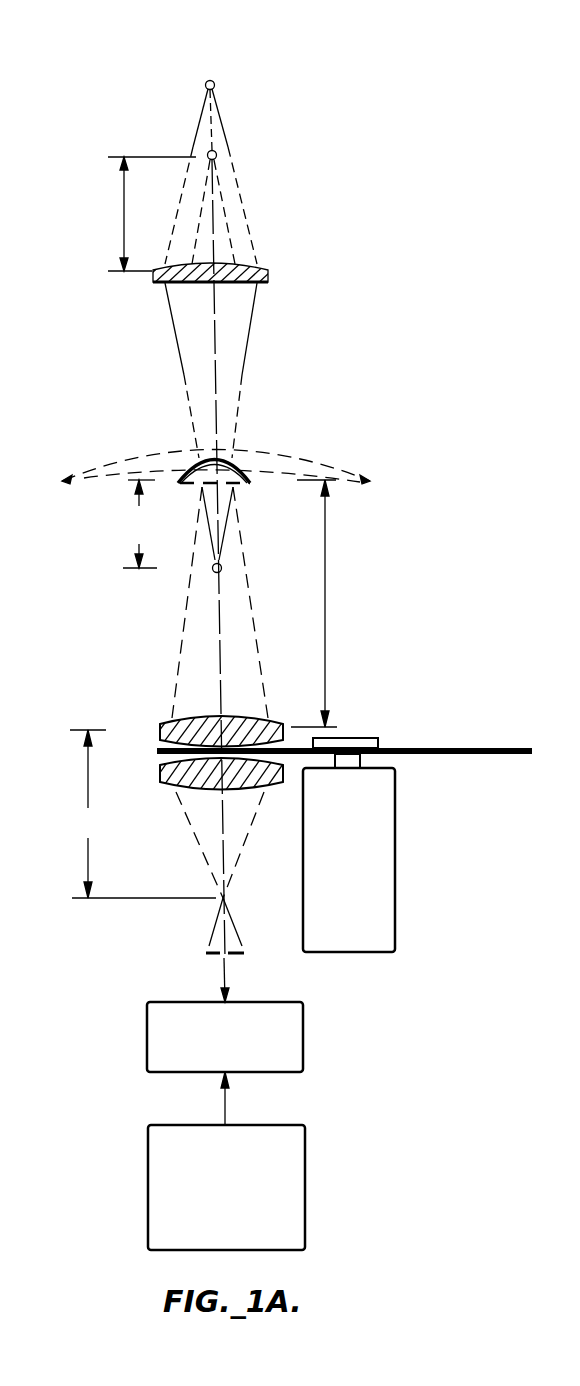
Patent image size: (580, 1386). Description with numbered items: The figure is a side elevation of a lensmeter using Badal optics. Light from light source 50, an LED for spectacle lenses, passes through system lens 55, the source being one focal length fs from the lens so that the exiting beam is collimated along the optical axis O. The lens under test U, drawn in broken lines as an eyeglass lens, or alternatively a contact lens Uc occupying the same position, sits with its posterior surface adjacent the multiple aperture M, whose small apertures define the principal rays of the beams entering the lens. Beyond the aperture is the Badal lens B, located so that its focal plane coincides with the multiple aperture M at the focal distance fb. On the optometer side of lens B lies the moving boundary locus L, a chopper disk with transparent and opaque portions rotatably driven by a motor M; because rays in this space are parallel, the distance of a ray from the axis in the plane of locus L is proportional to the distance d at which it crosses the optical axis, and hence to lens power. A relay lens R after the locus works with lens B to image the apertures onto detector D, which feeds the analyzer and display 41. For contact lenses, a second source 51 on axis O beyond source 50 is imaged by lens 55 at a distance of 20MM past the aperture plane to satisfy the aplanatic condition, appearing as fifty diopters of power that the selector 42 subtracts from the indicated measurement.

The light source 51 is at (215, 83).
The light source 50 is at (217, 155).
The system lens 55 is at (268, 279).
The optical axis O is at (216, 378).
The lens under test U is at (325, 464).
The contact lens under test Uc is at (240, 468).
The multiple aperture M is at (243, 492).
The focal length of lens 55 fs is at (121, 215).
The focal length of Badal lens B fb is at (314, 603).
The twenty millimeter distance 20MM is at (128, 524).
The Badal lens B is at (162, 731).
The moving boundary locus L is at (458, 748).
The relay lens R is at (163, 780).
The distance d is at (143, 814).
The detector D is at (203, 953).
The analyzer and display 41 is at (298, 1004).
The selector 42 is at (290, 1125).